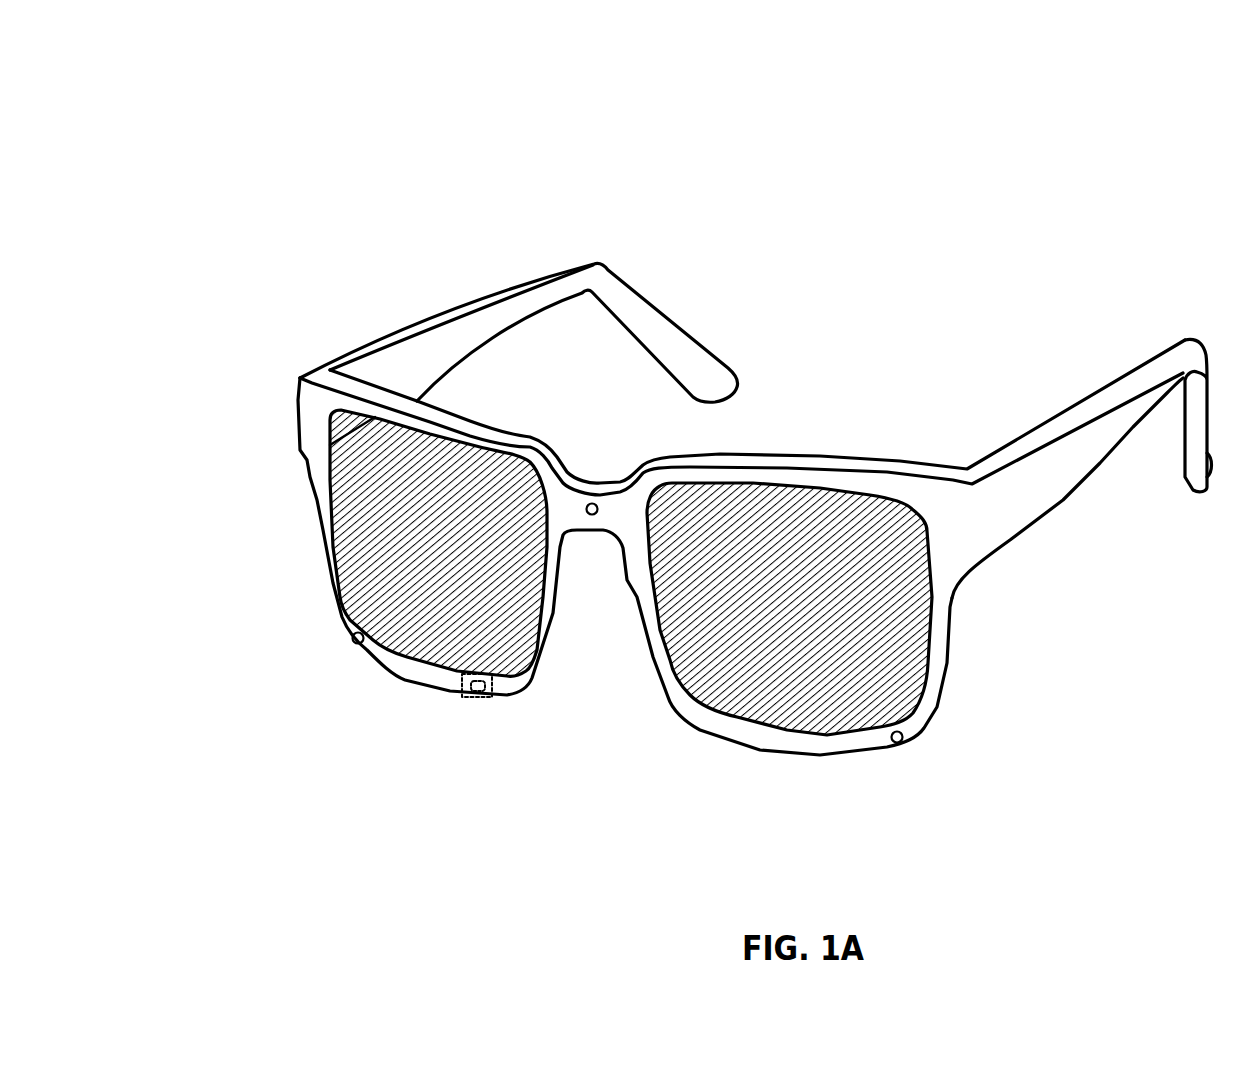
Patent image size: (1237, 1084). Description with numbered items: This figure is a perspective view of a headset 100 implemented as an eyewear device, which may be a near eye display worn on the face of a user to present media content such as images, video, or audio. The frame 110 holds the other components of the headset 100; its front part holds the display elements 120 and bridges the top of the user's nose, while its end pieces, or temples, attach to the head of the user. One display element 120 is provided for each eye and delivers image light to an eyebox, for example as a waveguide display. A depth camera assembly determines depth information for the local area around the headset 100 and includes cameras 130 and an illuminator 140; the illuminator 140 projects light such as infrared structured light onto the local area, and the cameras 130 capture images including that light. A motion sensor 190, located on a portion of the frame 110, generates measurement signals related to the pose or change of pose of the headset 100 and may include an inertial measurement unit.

The headset 100 is at (192, 96).
The frame 110 is at (1188, 340).
The display element 120 is at (378, 543).
The camera 130 is at (352, 645).
The illuminator 140 is at (591, 515).
The motion sensor 190 is at (477, 692).